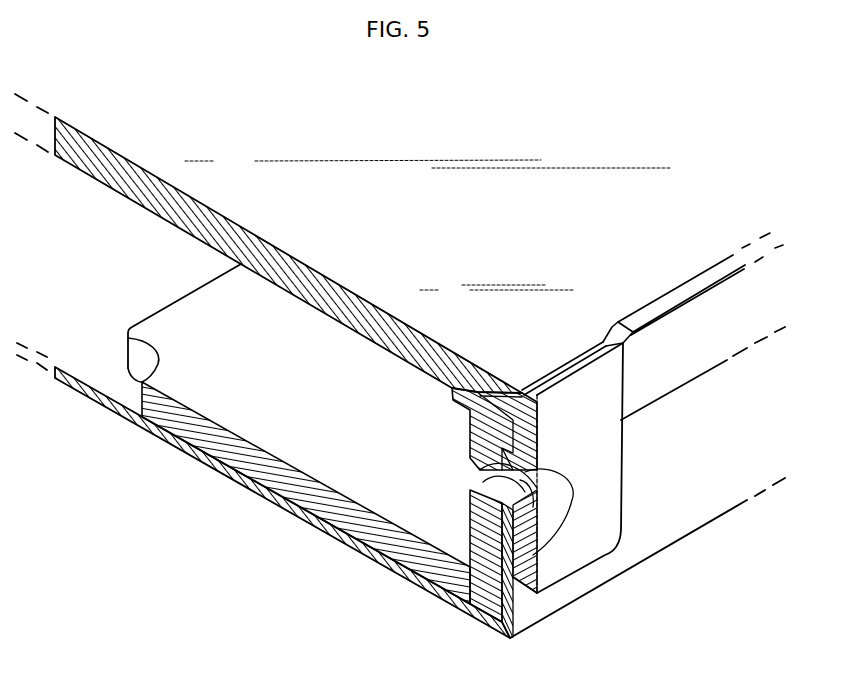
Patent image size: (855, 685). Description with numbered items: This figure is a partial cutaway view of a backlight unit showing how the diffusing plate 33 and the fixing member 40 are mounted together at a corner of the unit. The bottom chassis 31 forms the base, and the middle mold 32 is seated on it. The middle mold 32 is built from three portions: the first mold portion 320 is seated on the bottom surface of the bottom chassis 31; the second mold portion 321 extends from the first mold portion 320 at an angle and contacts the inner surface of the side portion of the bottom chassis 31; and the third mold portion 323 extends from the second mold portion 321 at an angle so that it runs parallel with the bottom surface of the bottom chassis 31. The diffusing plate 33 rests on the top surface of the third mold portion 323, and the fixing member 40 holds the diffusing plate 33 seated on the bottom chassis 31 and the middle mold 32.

The bottom chassis 31 is at (92, 414).
The middle mold 32 is at (332, 469).
The diffusing plate 33 is at (397, 206).
The first mold portion 320 is at (325, 467).
The second mold portion 321 is at (470, 530).
The third mold portion 323 is at (460, 412).
The fixing member 40 is at (600, 503).